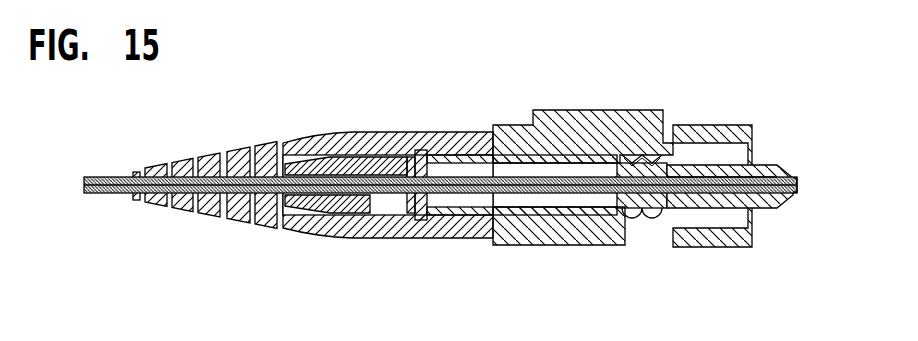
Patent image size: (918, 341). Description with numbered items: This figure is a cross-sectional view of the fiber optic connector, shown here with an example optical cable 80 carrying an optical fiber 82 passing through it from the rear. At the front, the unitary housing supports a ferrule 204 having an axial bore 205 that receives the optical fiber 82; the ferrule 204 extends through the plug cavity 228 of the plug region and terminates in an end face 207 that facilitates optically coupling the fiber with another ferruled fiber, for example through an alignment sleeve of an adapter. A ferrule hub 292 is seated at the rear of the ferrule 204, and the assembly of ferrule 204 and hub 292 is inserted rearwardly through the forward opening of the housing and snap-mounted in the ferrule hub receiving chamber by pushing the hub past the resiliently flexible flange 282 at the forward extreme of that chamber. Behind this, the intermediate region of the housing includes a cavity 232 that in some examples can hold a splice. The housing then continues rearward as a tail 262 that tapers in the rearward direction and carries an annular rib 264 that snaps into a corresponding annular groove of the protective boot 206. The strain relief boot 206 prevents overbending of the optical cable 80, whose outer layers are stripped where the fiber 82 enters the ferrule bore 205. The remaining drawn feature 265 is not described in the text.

The optical cable 80 is at (103, 175).
The optical fiber 82 is at (688, 188).
The ferrule 204 is at (772, 196).
The axial bore 205 is at (757, 182).
The protective boot 206 is at (318, 233).
The end face 207 is at (797, 189).
The plug cavity 228 is at (712, 218).
The cavity 232 is at (562, 200).
The tail 262 is at (332, 203).
The annular rib 264 is at (473, 232).
The spacer 265 is at (455, 232).
The flange 282 is at (654, 157).
The ferrule hub 292 is at (643, 212).